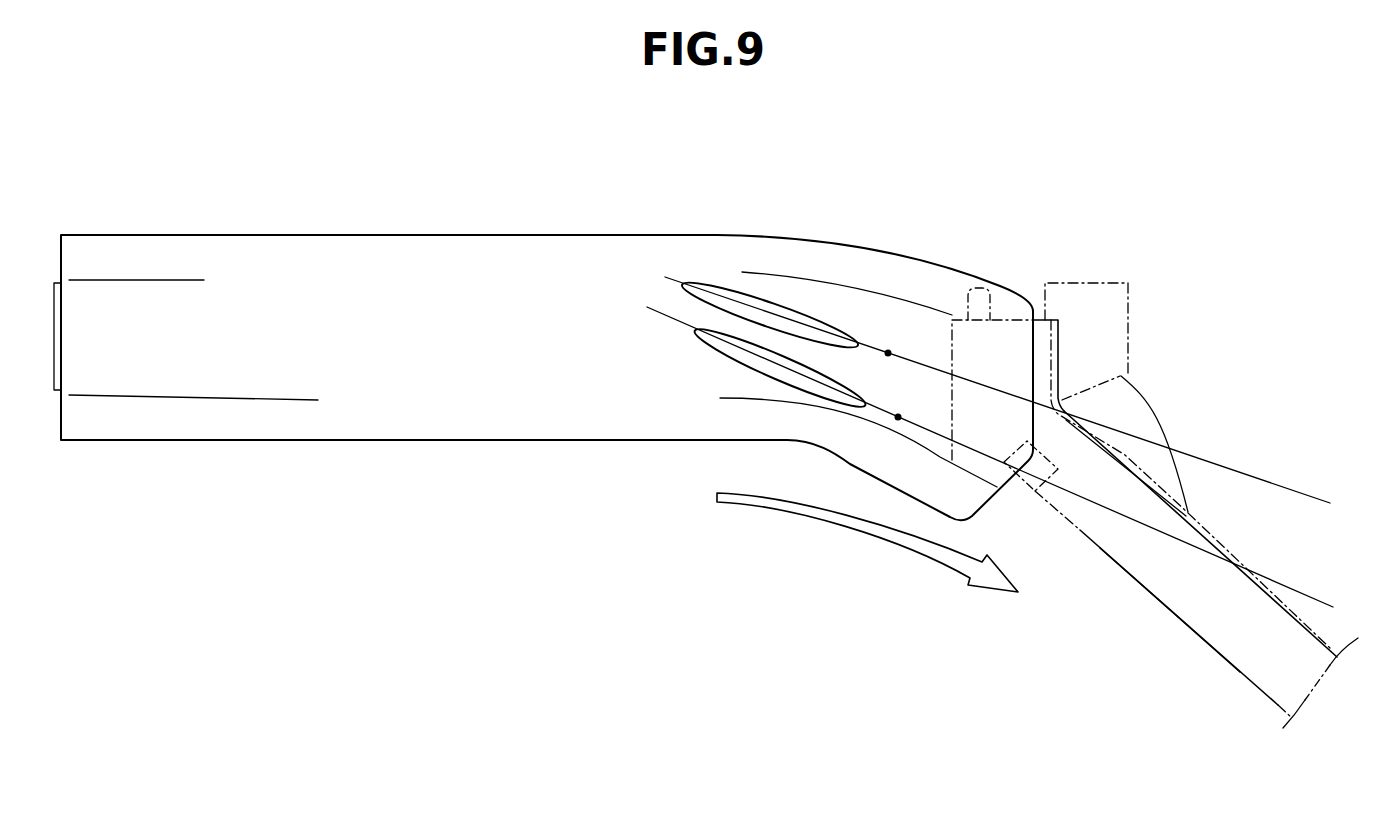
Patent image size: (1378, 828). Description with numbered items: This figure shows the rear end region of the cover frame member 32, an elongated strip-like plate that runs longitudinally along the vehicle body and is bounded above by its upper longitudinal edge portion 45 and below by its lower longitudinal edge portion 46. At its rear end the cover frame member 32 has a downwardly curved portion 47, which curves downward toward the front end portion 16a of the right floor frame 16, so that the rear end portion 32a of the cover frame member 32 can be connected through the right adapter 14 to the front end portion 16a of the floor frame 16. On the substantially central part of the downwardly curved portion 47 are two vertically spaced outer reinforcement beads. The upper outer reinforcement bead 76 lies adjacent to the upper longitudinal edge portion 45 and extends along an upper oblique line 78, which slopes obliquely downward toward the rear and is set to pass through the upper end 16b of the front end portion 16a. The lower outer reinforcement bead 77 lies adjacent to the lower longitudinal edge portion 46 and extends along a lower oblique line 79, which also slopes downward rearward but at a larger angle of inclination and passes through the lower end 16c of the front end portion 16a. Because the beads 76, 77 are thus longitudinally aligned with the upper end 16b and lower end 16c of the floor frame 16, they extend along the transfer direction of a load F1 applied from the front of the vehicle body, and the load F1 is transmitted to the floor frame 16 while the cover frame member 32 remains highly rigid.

The cover frame member 32 is at (485, 222).
The upper longitudinal edge portion 45 is at (322, 247).
The lower longitudinal edge portion 46 is at (308, 425).
The downwardly curved portion 47 is at (668, 393).
The upper outer reinforcement bead 76 is at (748, 297).
The lower outer reinforcement bead 77 is at (825, 385).
The upper oblique line 78 is at (888, 353).
The lower oblique line 79 is at (898, 417).
The rear end portion of the cover frame member 32a is at (1018, 358).
The adapter 14 is at (1130, 292).
The floor frame 16 is at (1232, 637).
The front end portion of the floor frame 16a is at (1095, 484).
The upper end of the front end portion 16b is at (1067, 422).
The lower end of the front end portion 16c is at (1035, 472).
The load F1 is at (847, 512).